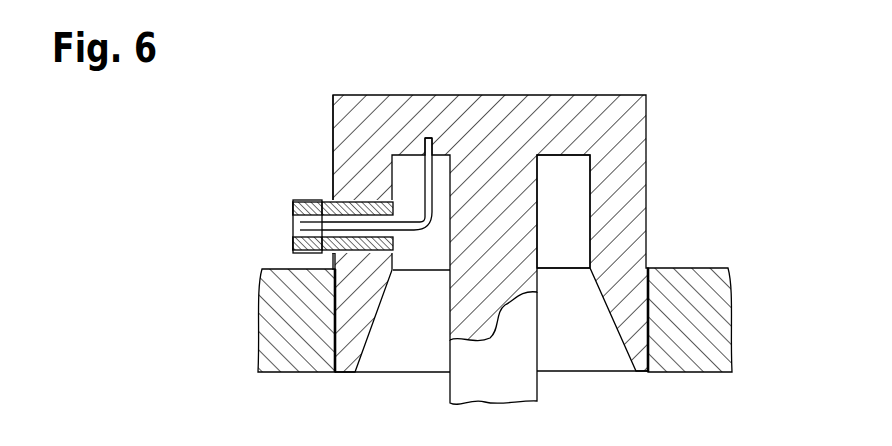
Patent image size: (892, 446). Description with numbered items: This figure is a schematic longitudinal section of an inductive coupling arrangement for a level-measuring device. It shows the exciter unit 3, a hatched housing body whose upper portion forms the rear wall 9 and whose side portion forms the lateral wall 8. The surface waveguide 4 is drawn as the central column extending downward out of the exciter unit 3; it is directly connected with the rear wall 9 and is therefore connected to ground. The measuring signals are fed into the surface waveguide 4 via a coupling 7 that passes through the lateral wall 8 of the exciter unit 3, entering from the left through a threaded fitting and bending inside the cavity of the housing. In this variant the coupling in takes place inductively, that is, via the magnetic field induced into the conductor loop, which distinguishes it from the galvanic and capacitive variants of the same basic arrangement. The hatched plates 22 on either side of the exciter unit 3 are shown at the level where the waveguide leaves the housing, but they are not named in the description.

The exciter unit 3 is at (441, 170).
The surface waveguide 4 is at (507, 377).
The coupling 7 is at (407, 232).
The lateral wall 8 is at (330, 138).
The rear wall 9 is at (525, 113).
The plate 22 is at (270, 328).